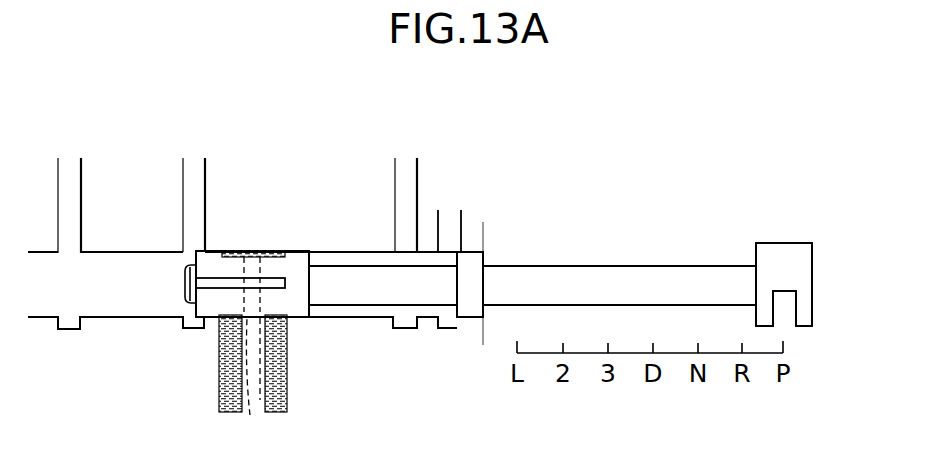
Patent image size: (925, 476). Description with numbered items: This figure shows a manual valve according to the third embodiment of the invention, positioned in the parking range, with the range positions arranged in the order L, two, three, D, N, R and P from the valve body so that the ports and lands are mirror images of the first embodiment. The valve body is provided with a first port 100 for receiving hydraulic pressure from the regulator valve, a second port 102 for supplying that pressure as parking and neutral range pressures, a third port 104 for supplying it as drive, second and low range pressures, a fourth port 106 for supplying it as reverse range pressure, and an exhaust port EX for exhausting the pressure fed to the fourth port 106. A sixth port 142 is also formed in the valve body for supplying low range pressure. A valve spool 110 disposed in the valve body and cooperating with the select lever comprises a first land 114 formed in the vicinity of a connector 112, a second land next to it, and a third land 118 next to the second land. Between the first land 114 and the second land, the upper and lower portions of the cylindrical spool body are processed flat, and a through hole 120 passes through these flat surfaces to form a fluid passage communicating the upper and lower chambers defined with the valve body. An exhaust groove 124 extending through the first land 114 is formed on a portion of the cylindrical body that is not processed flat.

The first port 100 is at (283, 337).
The second port 102 is at (232, 332).
The third port 104 is at (205, 196).
The fourth port 106 is at (403, 242).
The valve spool 110 is at (833, 244).
The connector 112 is at (806, 319).
The first land 114 is at (211, 318).
The third land 118 is at (477, 263).
The through hole 120 is at (257, 383).
The exhaust groove 124 is at (276, 280).
The sixth port 142 is at (82, 238).